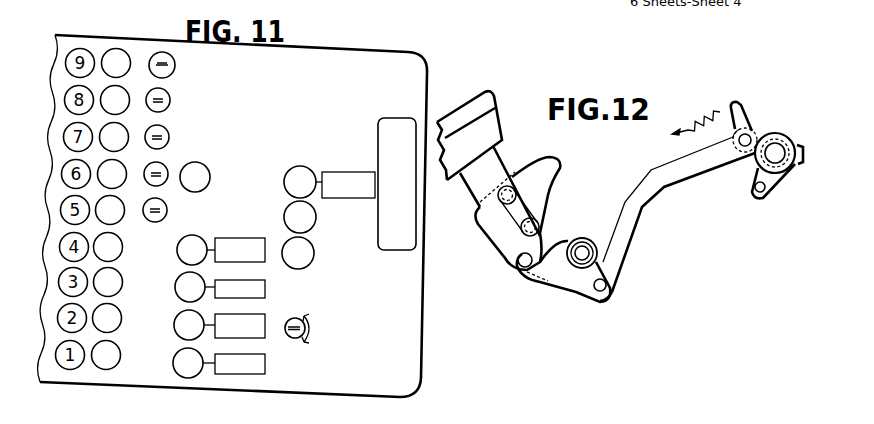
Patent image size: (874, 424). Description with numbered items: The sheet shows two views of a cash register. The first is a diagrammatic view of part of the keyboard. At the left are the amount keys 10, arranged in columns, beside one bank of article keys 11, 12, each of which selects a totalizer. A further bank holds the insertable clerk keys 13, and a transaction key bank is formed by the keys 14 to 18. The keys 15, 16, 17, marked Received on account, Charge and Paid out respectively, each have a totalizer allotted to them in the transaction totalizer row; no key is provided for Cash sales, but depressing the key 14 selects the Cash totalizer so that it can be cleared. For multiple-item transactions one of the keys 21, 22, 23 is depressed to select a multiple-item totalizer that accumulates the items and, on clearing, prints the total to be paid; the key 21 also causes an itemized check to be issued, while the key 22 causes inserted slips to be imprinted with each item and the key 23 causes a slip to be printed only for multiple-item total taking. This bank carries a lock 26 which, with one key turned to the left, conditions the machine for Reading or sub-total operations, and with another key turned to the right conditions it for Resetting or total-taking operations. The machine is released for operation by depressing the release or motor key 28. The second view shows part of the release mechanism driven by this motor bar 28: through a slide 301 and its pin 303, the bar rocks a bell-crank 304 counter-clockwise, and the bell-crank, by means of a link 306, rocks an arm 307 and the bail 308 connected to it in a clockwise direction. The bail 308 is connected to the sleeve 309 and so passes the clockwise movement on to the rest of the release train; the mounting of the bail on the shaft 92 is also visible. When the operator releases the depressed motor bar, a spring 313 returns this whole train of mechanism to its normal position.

In FIG. 11, the amount keys 10 is at (67, 370).
In FIG. 11, the article keys 11 is at (127, 70).
In FIG. 11, the article keys 12 is at (118, 257).
In FIG. 11, the insertable clerk keys 13 is at (175, 64).
In FIG. 11, the transaction key 14 is at (201, 150).
In FIG. 11, the Received on account key 15 is at (195, 237).
In FIG. 11, the Charge key 16 is at (176, 290).
In FIG. 11, the Paid out key 17 is at (174, 323).
In FIG. 11, the transaction key 18 is at (173, 363).
In FIG. 11, the multiple-item key 21 is at (309, 170).
In FIG. 11, the multiple-item key 22 is at (315, 224).
In FIG. 11, the multiple-item key 23 is at (307, 266).
In FIG. 11, the lock 26 is at (290, 338).
In FIG. 11, the release or motor key 28 is at (408, 125).
In FIG. 12, the release or motor key 28 is at (479, 100).
In FIG. 12, the slide 301 is at (545, 162).
In FIG. 12, the pin 303 is at (517, 266).
In FIG. 12, the bell-crank 304 is at (584, 284).
In FIG. 12, the link 306 is at (641, 232).
In FIG. 12, the arm 307 is at (757, 132).
In FIG. 12, the bail 308 is at (789, 172).
In FIG. 12, the sleeve 309 is at (754, 188).
In FIG. 12, the spring 313 is at (713, 108).
In FIG. 12, the shaft 92 is at (778, 143).